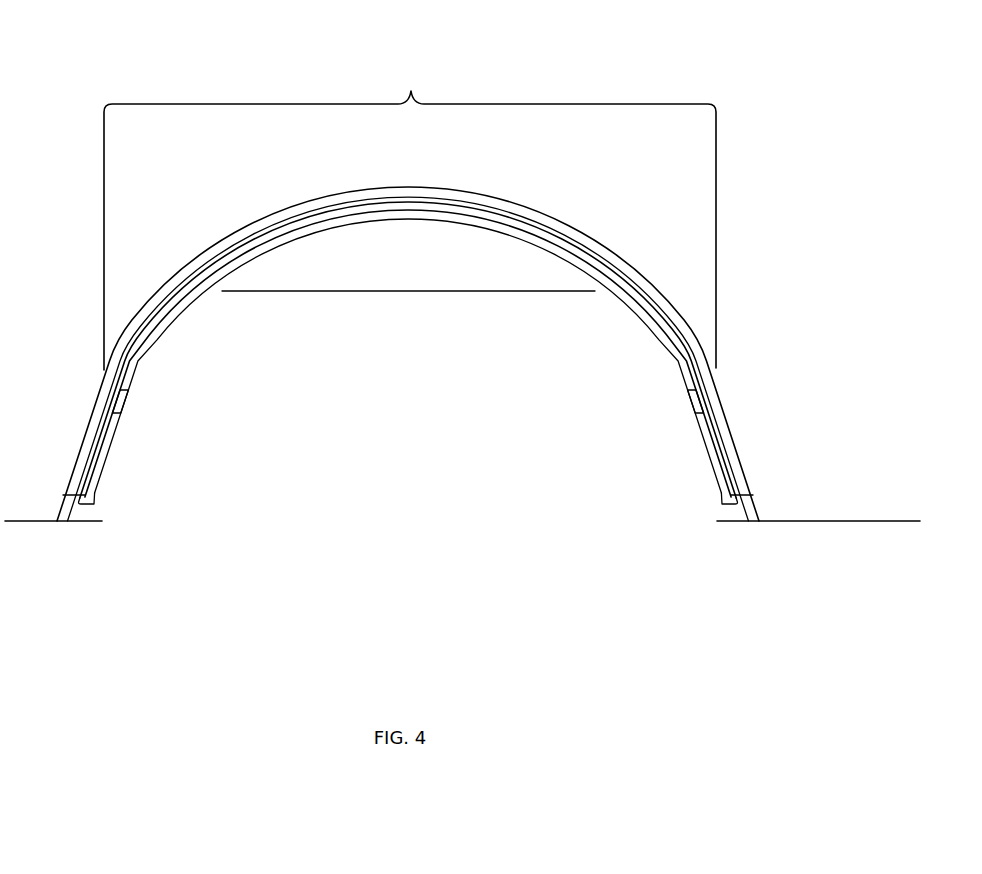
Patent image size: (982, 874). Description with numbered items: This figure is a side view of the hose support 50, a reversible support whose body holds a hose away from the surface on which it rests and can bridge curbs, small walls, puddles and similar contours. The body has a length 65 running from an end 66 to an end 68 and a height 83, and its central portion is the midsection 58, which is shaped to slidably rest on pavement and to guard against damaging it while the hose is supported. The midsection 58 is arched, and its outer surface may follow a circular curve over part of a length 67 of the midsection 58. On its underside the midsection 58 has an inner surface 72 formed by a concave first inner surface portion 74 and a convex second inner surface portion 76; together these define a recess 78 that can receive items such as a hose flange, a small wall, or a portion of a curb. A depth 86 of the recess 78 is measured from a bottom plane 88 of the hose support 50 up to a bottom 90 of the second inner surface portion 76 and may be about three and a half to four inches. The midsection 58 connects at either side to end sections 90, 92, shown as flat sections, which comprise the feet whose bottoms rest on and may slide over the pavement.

The hose support 50 is at (814, 45).
The midsection 58 is at (410, 220).
The length 65 is at (52, 527).
The end 66 is at (755, 527).
The length 67 is at (105, 15).
The end 68 is at (65, 527).
The inner surface 72 is at (699, 452).
The first inner surface portion 74 is at (660, 369).
The second inner surface portion 76 is at (357, 300).
The recess 78 is at (388, 462).
The height 83 is at (493, 187).
The depth 86 is at (485, 291).
The bottom plane 88 is at (26, 525).
The end section 90 is at (722, 374).
The end section 92 is at (90, 372).